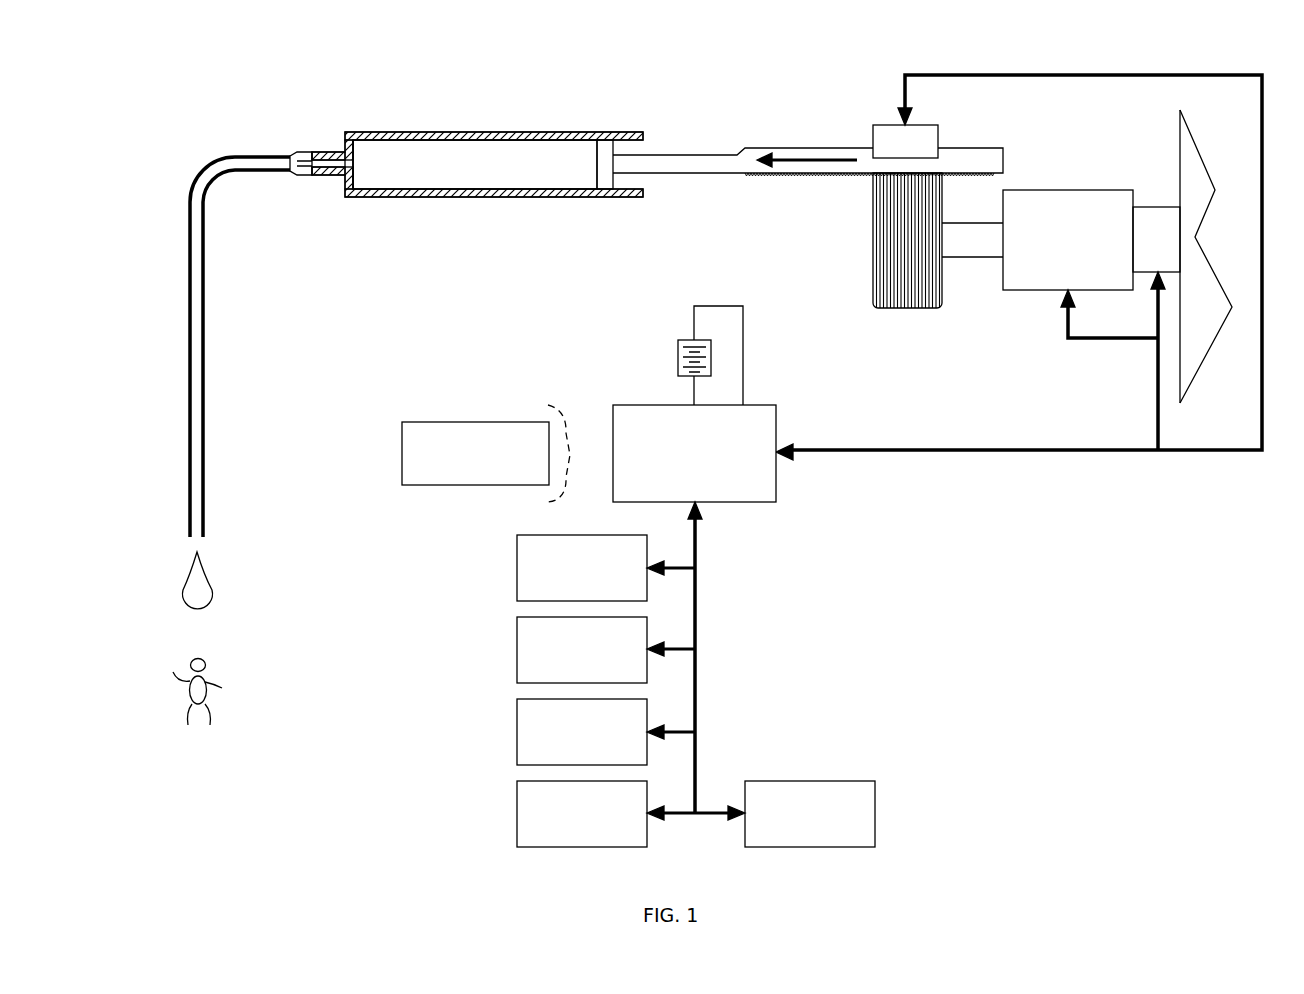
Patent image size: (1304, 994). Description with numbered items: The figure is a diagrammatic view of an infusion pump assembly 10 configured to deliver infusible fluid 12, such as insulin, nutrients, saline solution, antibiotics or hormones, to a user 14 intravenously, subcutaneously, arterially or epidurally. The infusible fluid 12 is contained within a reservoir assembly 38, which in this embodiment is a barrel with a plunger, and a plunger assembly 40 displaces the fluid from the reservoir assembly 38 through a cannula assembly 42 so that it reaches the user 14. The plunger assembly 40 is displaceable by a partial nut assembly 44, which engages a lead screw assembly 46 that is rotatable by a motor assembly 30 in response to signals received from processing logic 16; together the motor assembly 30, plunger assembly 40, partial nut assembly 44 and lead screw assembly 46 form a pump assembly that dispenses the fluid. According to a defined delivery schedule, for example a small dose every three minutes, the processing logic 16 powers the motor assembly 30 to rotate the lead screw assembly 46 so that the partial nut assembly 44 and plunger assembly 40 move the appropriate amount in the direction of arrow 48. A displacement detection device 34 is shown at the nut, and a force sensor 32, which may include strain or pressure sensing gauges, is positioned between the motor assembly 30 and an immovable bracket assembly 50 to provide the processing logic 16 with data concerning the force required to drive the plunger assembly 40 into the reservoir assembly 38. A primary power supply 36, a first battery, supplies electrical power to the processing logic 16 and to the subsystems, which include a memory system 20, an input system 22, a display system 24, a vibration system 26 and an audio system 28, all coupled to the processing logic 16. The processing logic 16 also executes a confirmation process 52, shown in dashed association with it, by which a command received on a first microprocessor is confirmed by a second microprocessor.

The infusion pump assembly 10 is at (196, 53).
The infusible fluid 12 is at (443, 167).
The user 14 is at (208, 692).
The processing logic 16 is at (776, 421).
The memory system 20 is at (517, 568).
The input system 22 is at (517, 650).
The display system 24 is at (517, 732).
The vibration system 26 is at (517, 814).
The audio system 28 is at (875, 814).
The motor assembly 30 is at (1037, 240).
The force sensor 32 is at (1156, 239).
The displacement detection device 34 is at (905, 141).
The primary power supply 36 is at (678, 358).
The reservoir assembly 38 is at (393, 132).
The plunger assembly 40 is at (603, 163).
The cannula assembly 42 is at (262, 156).
The partial nut assembly 44 is at (737, 157).
The lead screw assembly 46 is at (873, 265).
The arrow 48 is at (790, 160).
The bracket assembly 50 is at (1180, 172).
The confirmation process 52 is at (402, 452).